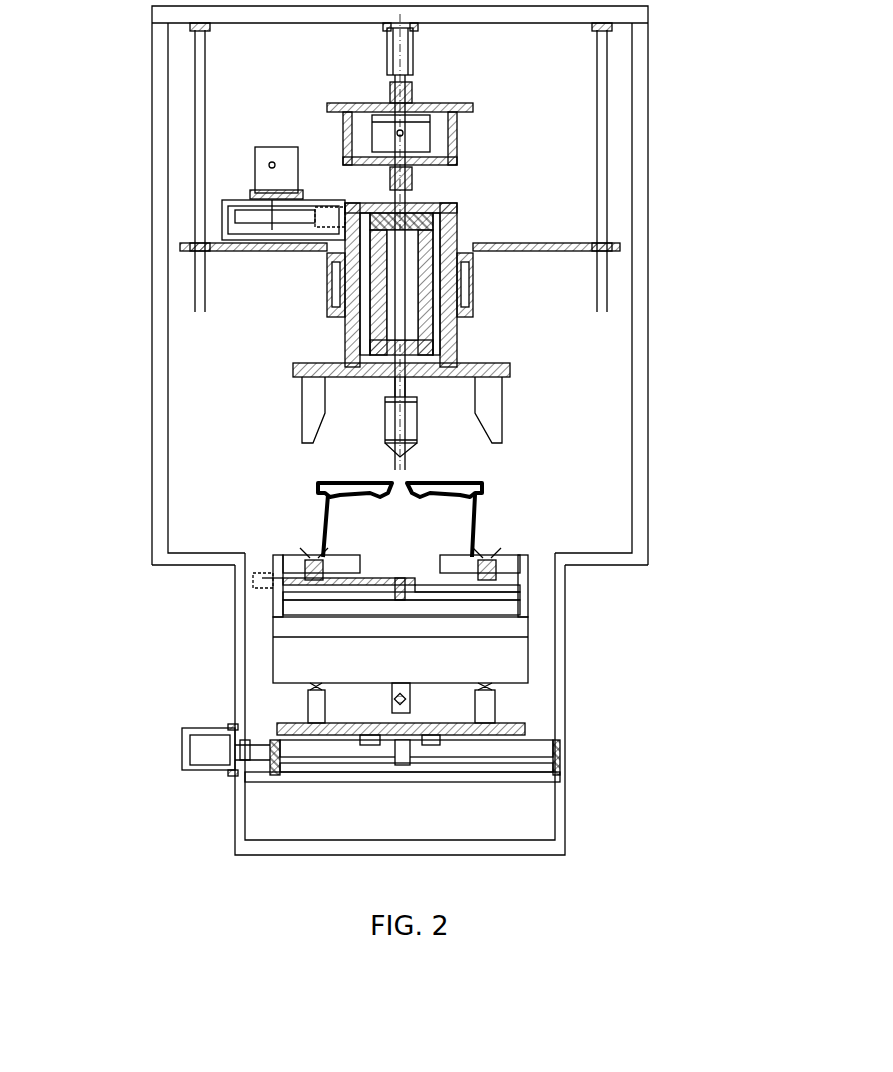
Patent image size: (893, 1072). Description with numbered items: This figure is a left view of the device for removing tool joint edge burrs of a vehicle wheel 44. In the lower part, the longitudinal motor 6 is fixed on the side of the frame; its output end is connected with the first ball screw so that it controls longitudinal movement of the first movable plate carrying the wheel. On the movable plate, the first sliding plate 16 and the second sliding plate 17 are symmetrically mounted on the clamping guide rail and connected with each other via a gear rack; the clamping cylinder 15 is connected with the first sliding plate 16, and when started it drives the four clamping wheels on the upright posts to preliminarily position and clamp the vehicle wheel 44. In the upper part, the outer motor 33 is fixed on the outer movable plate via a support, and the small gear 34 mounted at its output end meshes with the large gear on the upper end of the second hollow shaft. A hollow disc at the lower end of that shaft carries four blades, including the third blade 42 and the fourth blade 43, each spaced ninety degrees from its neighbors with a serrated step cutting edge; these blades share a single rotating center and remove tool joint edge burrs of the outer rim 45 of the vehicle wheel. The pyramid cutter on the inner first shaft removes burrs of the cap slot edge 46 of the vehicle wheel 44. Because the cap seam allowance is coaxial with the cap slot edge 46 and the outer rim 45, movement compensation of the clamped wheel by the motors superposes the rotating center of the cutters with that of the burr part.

The longitudinal motor 6 is at (200, 747).
The clamping cylinder 15 is at (255, 582).
The first sliding plate 16 is at (273, 565).
The second sliding plate 17 is at (528, 565).
The outer motor 33 is at (272, 182).
The small gear 34 is at (240, 217).
The third blade 42 is at (305, 422).
The fourth blade 43 is at (491, 415).
The vehicle wheel 44 is at (475, 505).
The outer rim of the vehicle wheel 45 is at (313, 478).
The cap slot edge of the vehicle wheel 46 is at (408, 485).